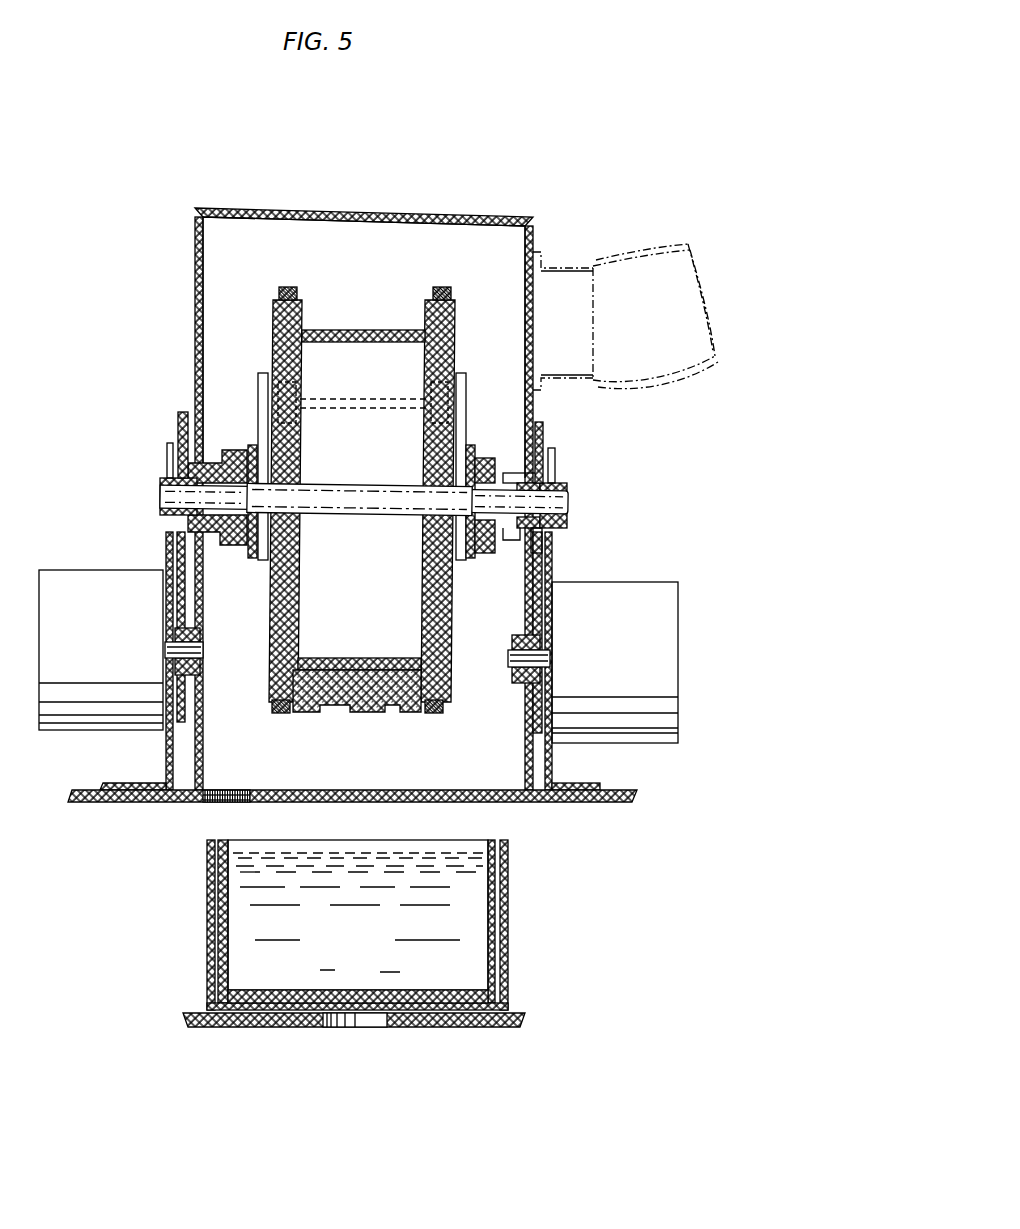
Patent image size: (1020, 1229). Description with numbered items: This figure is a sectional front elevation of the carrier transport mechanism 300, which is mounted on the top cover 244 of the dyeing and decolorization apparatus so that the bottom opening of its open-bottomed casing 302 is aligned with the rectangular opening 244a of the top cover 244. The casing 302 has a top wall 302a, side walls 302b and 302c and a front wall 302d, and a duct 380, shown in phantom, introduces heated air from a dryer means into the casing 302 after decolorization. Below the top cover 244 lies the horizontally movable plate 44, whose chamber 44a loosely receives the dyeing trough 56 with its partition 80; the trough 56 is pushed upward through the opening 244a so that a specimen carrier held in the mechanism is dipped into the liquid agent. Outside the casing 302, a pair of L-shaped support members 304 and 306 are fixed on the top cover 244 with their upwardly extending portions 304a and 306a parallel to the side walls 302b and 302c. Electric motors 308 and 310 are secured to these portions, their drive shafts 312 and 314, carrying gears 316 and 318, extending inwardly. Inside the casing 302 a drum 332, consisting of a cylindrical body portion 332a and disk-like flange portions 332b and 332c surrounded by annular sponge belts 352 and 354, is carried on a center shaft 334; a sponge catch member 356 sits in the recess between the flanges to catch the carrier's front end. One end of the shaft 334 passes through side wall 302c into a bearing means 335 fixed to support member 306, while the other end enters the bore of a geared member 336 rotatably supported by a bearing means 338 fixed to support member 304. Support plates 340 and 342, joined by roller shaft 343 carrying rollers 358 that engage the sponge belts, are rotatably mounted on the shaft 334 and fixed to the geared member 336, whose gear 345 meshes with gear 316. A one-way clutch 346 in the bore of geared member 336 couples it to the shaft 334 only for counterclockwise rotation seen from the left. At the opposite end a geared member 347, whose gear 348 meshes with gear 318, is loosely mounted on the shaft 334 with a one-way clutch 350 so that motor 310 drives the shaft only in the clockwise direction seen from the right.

The carrier transport mechanism 300 is at (483, 155).
The open-bottomed casing 302 is at (370, 468).
The top wall 302a is at (390, 214).
The side wall 302b is at (193, 243).
The side wall 302c is at (530, 232).
The front wall 302d is at (228, 237).
The duct 380 is at (650, 262).
The drum 332 is at (369, 492).
The cylindrical body portion 332a is at (355, 330).
The flange portion 332b is at (277, 325).
The flange portion 332c is at (453, 335).
The annular sponge belt 352 is at (288, 287).
The annular sponge belt 354 is at (440, 287).
The insulating block 356 is at (375, 712).
The rollers 358 is at (278, 365).
The roller shaft 343 is at (362, 398).
The support plate 340 is at (260, 382).
The support plate 342 is at (465, 390).
The center shaft 334 is at (358, 485).
The geared member 336 is at (218, 458).
The one-way clutch 346 is at (222, 520).
The geared member 347 is at (495, 470).
The bearing means 338 is at (162, 478).
The gear 345 is at (178, 435).
The bearing means 335 is at (567, 490).
The one-way clutch 350 is at (543, 468).
The gear 348 is at (542, 550).
The L-shaped support member 304 is at (160, 784).
The upwardly extending portion 304a is at (167, 550).
The L-shaped support member 306 is at (553, 788).
The upwardly extending portion 306a is at (552, 565).
The drive shaft 312 is at (203, 650).
The drive shaft 314 is at (508, 665).
The gear 316 is at (186, 705).
The gear 318 is at (532, 725).
The electric motor 308 is at (90, 572).
The electric motor 310 is at (655, 735).
The top cover 244 is at (352, 831).
The rectangular opening 244a is at (230, 800).
The dyeing trough 56 is at (389, 925).
The partition 80 is at (300, 992).
The horizontally movable plate 44 is at (354, 1053).
The chamber 44a is at (357, 1027).